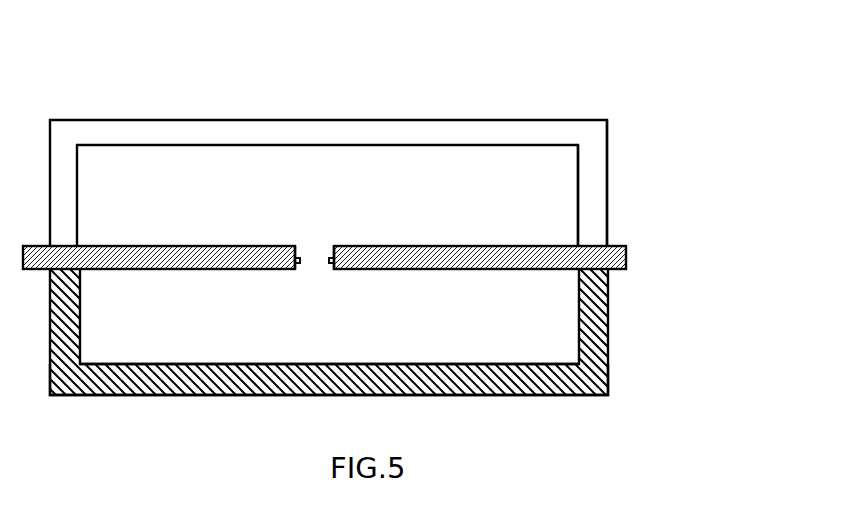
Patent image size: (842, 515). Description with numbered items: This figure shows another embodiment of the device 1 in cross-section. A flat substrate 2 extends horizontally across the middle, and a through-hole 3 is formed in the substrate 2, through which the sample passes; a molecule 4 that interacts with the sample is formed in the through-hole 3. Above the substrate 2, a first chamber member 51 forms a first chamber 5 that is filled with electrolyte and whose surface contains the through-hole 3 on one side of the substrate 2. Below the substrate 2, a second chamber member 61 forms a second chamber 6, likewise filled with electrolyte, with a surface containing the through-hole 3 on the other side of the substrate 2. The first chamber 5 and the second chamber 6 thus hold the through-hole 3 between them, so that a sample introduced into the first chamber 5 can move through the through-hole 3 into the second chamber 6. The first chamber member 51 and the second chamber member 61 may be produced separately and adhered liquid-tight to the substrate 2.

The device 1 is at (663, 66).
The substrate 2 is at (626, 250).
The through-hole 3 is at (315, 250).
The molecule that interacts with the sample 4 is at (299, 263).
The first chamber 5 is at (527, 173).
The first chamber member 51 is at (598, 200).
The second chamber 6 is at (527, 345).
The second chamber member 61 is at (608, 365).